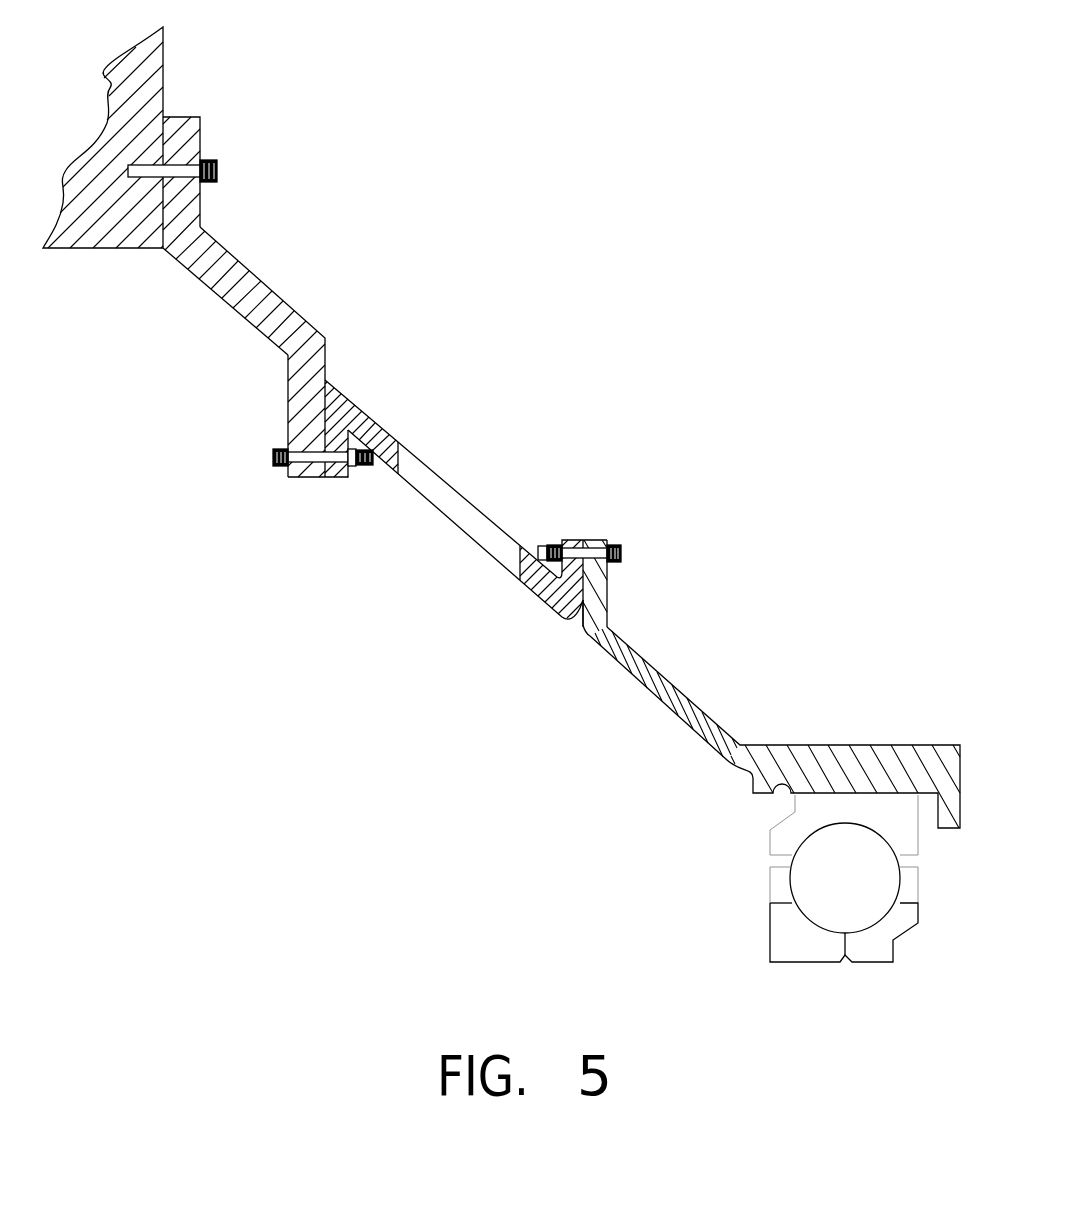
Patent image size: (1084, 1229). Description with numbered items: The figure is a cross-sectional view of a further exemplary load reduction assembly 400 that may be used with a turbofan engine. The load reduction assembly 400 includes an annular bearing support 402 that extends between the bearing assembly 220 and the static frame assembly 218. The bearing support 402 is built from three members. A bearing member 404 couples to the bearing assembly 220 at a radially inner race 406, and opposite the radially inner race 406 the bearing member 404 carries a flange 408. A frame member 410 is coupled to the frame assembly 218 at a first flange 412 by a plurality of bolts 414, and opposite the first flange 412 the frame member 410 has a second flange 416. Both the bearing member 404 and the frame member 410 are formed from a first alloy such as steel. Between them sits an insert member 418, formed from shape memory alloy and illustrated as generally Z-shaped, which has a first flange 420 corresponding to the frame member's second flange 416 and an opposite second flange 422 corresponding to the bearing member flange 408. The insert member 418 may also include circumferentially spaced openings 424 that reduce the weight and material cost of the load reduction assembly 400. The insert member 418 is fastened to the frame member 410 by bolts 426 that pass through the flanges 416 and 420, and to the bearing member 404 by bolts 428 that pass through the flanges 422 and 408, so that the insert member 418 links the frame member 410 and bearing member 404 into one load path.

The static frame assembly 218 is at (138, 82).
The bearing assembly 220 is at (792, 937).
The load reduction assembly 400 is at (647, 250).
The annular bearing support 402 is at (650, 502).
The bearing member 404 is at (701, 709).
The radially inner race 406 is at (925, 797).
The flange 408 is at (608, 597).
The frame member 410 is at (253, 272).
The first flange 412 is at (203, 193).
The bolts 414 is at (201, 140).
The second flange 416 is at (288, 390).
The insert member 418 is at (369, 424).
The first flange 420 is at (340, 478).
The second flange 422 is at (575, 540).
The openings 424 is at (397, 463).
The bolts 426 is at (273, 457).
The bolts 428 is at (622, 552).